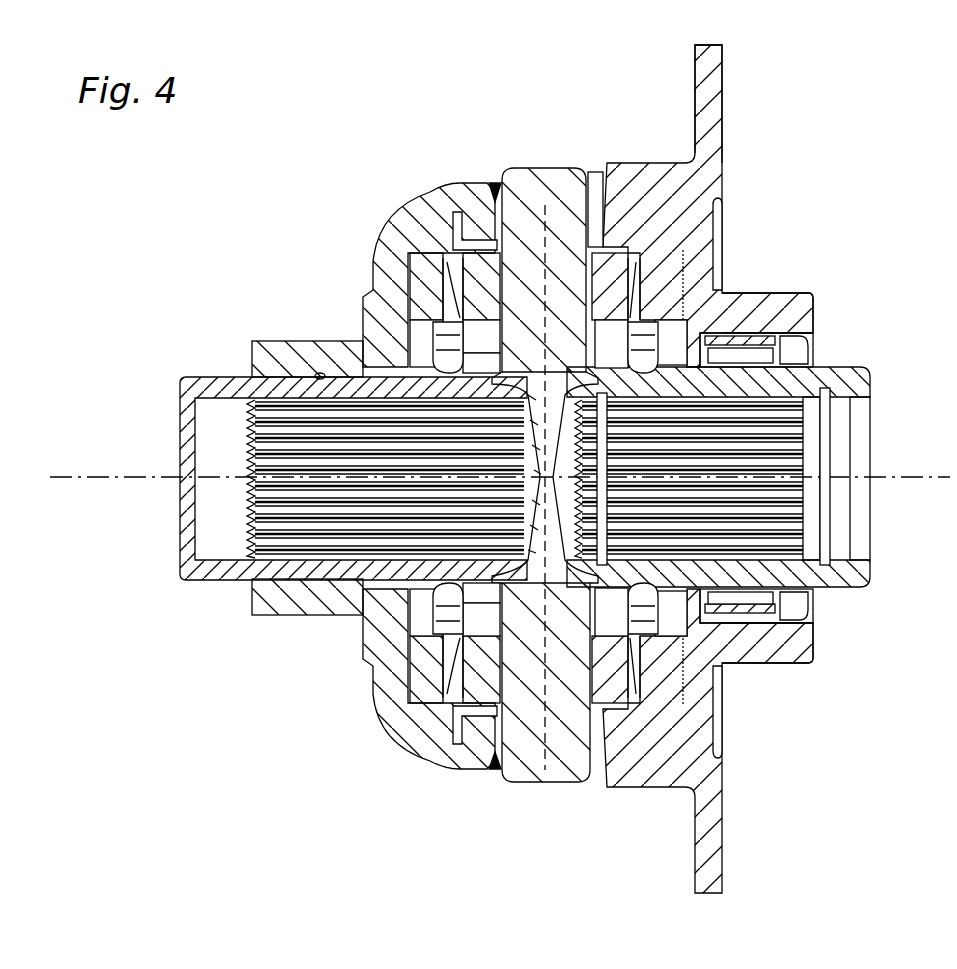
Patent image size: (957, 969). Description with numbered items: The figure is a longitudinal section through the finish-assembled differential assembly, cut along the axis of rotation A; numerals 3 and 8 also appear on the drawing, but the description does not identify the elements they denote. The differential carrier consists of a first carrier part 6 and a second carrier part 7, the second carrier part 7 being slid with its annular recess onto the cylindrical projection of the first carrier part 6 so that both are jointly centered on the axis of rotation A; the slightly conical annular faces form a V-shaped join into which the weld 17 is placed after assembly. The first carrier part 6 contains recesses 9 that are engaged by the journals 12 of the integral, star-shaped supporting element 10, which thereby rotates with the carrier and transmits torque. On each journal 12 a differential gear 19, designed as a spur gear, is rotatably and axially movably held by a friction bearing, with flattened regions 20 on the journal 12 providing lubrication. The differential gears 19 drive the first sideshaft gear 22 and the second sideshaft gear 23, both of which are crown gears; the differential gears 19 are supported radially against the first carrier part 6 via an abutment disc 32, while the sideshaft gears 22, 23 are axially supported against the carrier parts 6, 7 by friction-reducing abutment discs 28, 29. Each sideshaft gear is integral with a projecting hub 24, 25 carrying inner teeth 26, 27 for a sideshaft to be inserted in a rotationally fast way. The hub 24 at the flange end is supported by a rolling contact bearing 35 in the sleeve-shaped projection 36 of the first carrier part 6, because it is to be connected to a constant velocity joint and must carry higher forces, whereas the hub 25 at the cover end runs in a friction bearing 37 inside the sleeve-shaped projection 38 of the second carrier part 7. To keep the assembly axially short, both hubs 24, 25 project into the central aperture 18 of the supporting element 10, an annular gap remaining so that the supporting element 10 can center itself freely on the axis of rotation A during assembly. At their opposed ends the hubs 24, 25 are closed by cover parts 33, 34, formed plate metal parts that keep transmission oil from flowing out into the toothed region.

The cover ring 3 is at (753, 292).
The first carrier part 6 is at (715, 163).
The second carrier part 7 is at (373, 250).
The flange 8 is at (708, 78).
The recesses 9 is at (597, 770).
The supporting element 10 is at (541, 160).
The journals 12 is at (548, 768).
The weld 17 is at (494, 183).
The central aperture 18 is at (639, 313).
The differential gear 19 is at (480, 748).
The flattened regions 20 is at (595, 237).
The first sideshaft gear 22 is at (690, 668).
The second sideshaft gear 23 is at (423, 267).
The hub 24 is at (838, 372).
The hub 25 is at (283, 593).
The inner teeth 26 is at (800, 506).
The inner teeth 27 is at (360, 542).
The abutment disc 28 is at (717, 660).
The abutment disc 29 is at (410, 695).
The abutment disc 32 is at (473, 215).
The cover part 33 is at (613, 612).
The cover part 34 is at (455, 643).
The rolling contact bearing 35 is at (770, 604).
The sleeve-shaped projection 36 is at (783, 318).
The friction bearing 37 is at (318, 372).
The sleeve-shaped projection 38 is at (275, 347).
The axis of rotation A is at (937, 470).